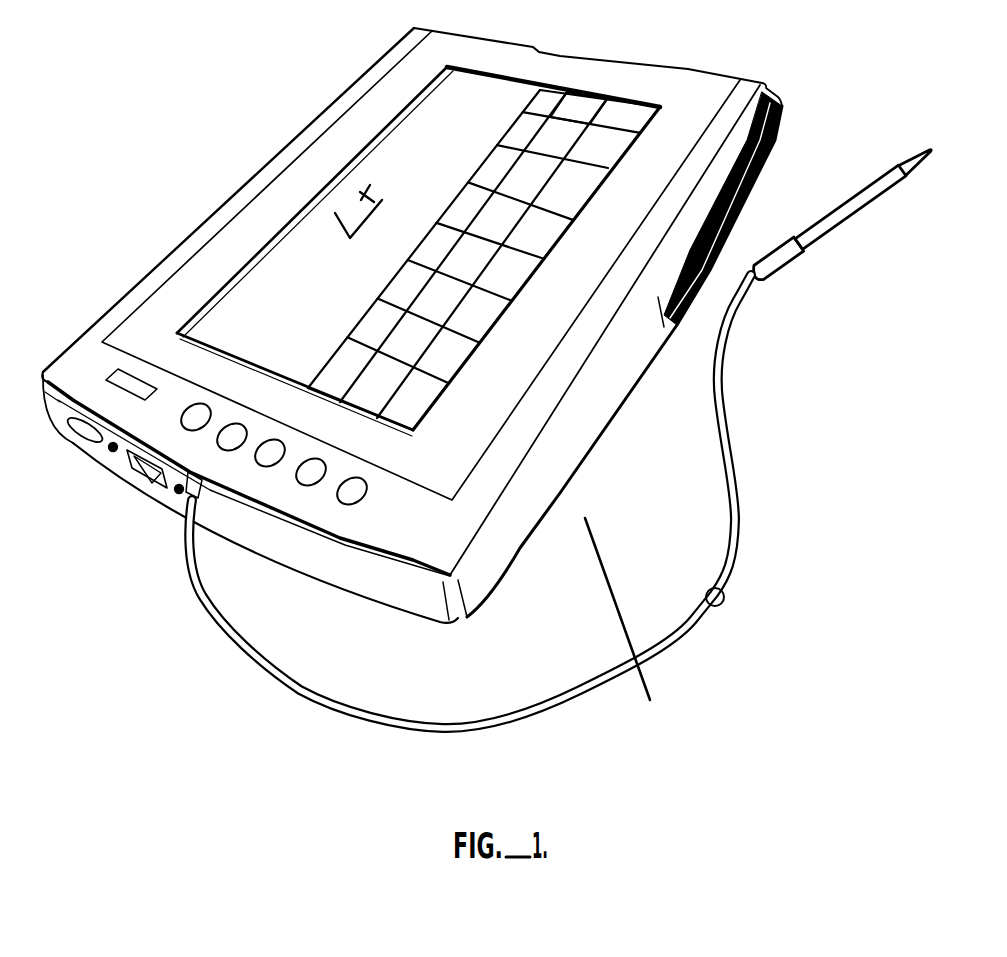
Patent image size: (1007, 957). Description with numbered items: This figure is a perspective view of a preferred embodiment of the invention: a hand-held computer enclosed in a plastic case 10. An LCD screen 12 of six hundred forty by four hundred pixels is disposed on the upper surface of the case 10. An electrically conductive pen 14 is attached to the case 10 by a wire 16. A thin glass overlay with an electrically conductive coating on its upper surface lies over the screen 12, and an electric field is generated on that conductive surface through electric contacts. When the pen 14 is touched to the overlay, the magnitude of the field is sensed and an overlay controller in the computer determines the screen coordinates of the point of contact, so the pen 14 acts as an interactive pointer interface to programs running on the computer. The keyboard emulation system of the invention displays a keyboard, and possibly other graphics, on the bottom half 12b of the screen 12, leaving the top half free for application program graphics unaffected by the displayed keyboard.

The plastic case 10 is at (708, 71).
The LCD screen 12 is at (608, 173).
The bottom half of the screen 12b is at (595, 93).
The electrically conductive pen 14 is at (847, 223).
The wire 16 is at (727, 601).